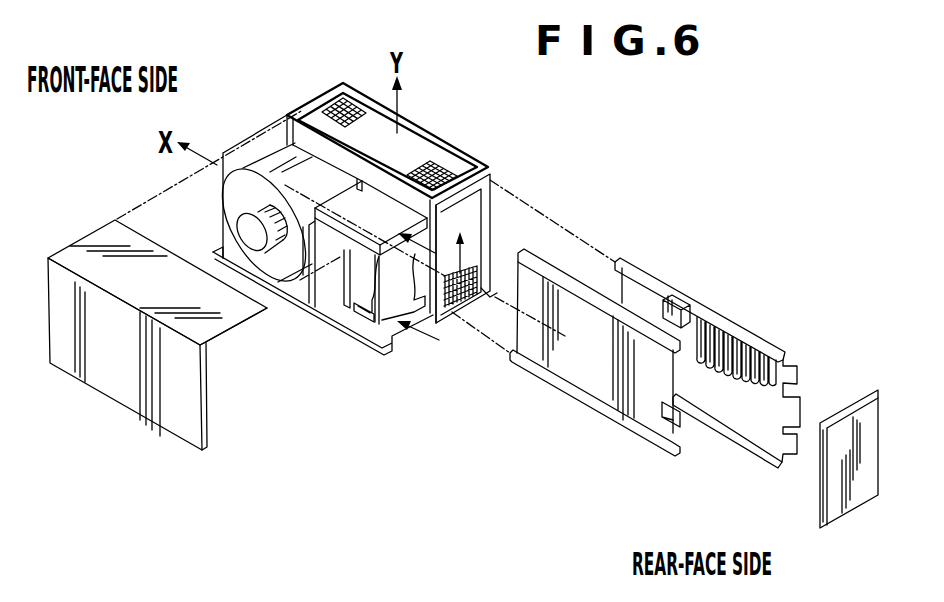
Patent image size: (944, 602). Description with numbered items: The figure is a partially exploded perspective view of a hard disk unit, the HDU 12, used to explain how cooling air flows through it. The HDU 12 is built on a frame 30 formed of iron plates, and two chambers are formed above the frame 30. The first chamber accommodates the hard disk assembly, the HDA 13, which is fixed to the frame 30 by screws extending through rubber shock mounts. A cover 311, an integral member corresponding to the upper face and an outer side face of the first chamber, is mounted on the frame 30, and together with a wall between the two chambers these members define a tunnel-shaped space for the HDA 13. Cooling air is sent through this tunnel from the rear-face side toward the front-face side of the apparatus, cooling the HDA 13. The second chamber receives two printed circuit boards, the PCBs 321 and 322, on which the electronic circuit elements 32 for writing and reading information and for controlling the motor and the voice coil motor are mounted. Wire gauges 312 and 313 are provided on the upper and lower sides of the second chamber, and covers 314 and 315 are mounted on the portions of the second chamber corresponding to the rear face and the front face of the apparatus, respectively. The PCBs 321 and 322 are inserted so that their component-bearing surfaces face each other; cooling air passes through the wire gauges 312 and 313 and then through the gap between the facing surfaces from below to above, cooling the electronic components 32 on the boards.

The HDU 12 is at (433, 122).
The HDA 13 is at (350, 292).
The frame 30 is at (393, 345).
The electronic circuit elements 32 is at (697, 302).
The cover 311 is at (138, 418).
The wire gauge 312 is at (453, 315).
The wire gauge 313 is at (452, 163).
The cover 314 is at (858, 512).
The cover 315 is at (303, 107).
The printed circuit board 321 is at (603, 413).
The printed circuit board 322 is at (743, 330).